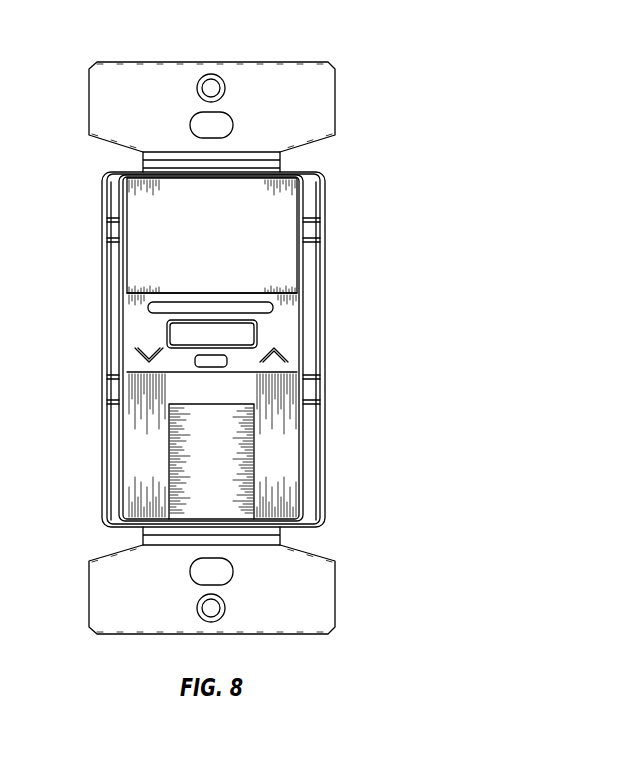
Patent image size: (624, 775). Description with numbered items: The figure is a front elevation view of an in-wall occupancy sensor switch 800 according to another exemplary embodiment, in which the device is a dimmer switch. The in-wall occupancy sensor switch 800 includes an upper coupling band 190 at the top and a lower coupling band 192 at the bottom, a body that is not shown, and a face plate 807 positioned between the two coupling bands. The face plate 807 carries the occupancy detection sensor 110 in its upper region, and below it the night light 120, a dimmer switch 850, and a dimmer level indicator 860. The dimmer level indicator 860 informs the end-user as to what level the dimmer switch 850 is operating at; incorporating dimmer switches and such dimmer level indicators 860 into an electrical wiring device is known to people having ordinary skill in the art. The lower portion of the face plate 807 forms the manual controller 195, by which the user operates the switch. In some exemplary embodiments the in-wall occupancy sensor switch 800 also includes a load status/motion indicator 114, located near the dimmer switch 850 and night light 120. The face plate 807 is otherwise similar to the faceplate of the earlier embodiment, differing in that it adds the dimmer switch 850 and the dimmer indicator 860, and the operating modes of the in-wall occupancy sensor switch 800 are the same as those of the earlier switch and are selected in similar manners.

The in-wall occupancy sensor switch 800 is at (339, 62).
The upper coupling band 190 is at (315, 115).
The lower coupling band 192 is at (335, 590).
The occupancy detection sensor 110 is at (212, 235).
The dimmer level indicator 860 is at (148, 307).
The night light 120 is at (167, 333).
The load status/motion indicator 114 is at (230, 360).
The dimmer switch 850 is at (280, 324).
The manual controller 195 is at (145, 463).
The face plate 807 is at (278, 437).